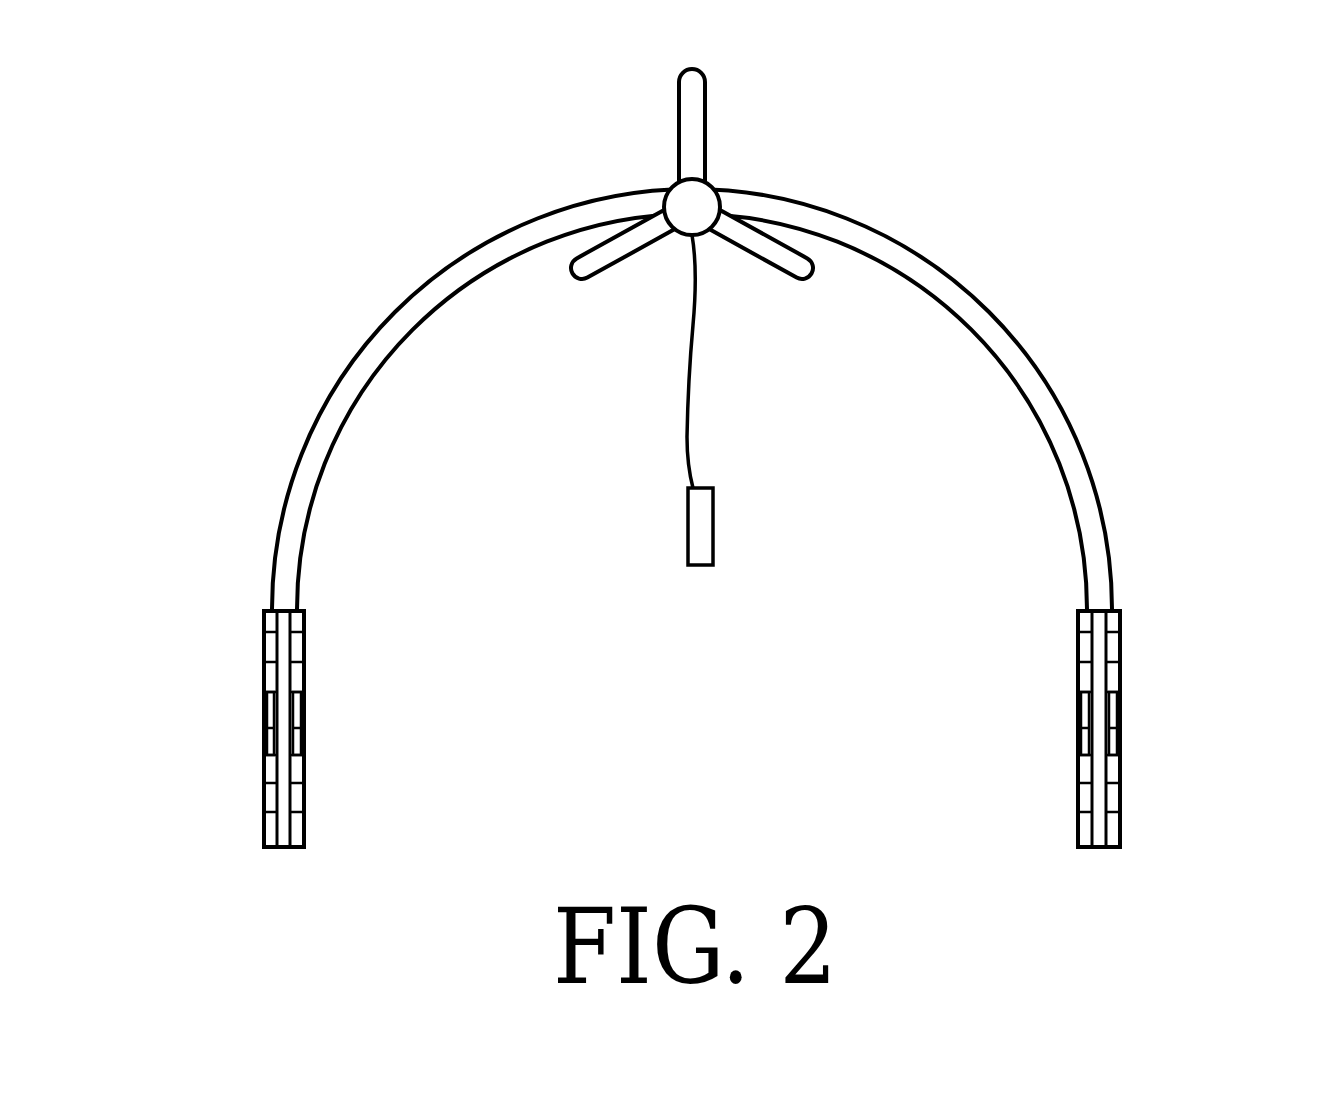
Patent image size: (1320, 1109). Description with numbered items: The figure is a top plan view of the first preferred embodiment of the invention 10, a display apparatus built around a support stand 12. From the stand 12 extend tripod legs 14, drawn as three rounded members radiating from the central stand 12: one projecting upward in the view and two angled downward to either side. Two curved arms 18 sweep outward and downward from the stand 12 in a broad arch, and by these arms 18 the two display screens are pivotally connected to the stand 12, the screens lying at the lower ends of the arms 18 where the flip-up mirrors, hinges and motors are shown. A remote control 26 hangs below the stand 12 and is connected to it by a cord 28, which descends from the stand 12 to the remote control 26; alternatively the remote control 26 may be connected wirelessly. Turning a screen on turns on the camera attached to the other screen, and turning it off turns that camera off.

The first preferred embodiment of the invention 10 is at (701, 516).
The support stand 12 is at (670, 187).
The tripod legs 14 is at (705, 122).
The arms 18 is at (337, 442).
The remote control 26 is at (713, 522).
The cord 28 is at (692, 381).